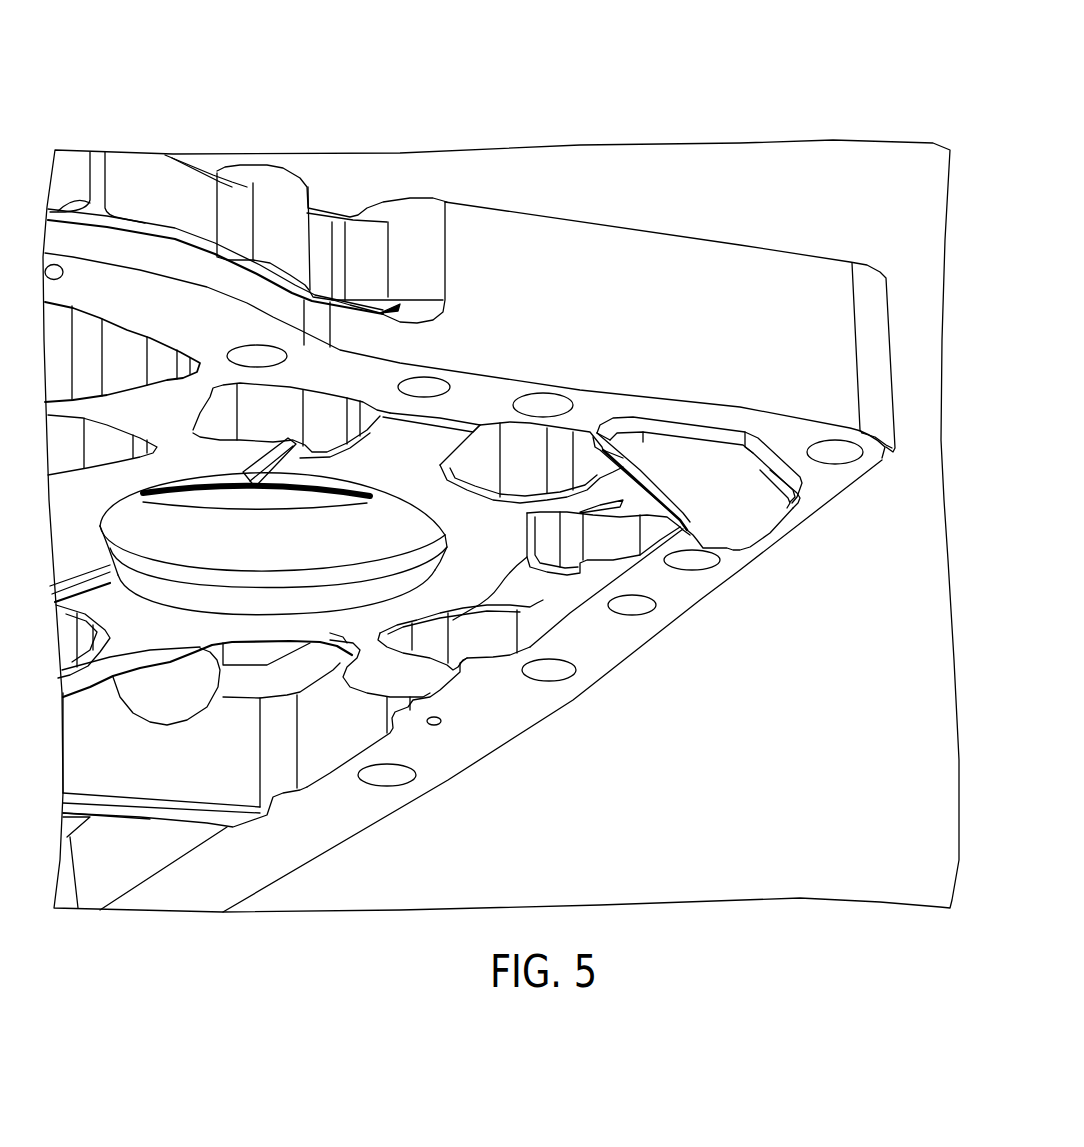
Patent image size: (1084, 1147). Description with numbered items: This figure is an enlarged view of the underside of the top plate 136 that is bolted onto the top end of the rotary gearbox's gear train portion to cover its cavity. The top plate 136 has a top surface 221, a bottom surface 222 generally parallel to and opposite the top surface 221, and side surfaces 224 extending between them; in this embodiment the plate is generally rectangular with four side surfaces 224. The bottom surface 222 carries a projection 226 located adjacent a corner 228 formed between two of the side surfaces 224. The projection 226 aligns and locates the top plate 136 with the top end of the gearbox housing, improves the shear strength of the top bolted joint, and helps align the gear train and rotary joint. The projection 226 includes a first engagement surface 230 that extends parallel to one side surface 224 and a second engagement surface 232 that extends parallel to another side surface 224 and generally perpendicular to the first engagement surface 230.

The top plate 136 is at (676, 84).
The top surface 221 is at (570, 218).
The bottom surface 222 is at (618, 638).
The side surfaces 224 is at (724, 262).
The projection 226 is at (749, 523).
The corner 228 is at (881, 456).
The first engagement surface 230 is at (703, 433).
The second engagement surface 232 is at (793, 508).